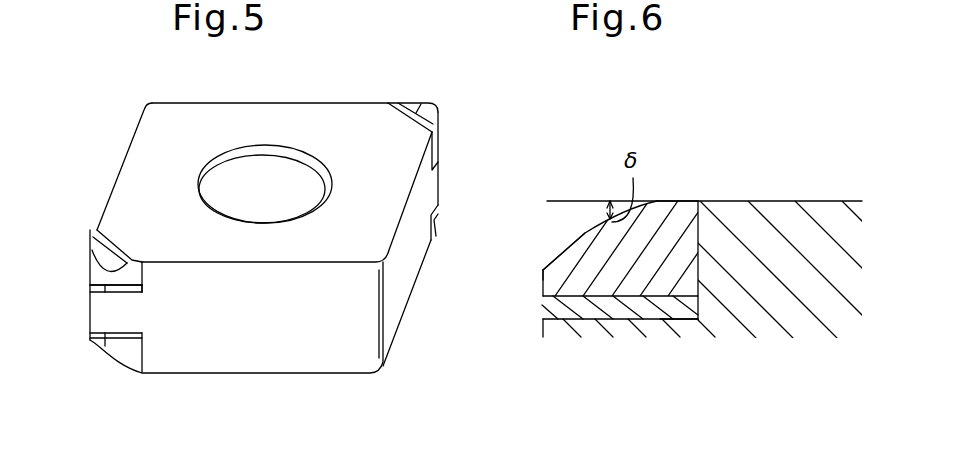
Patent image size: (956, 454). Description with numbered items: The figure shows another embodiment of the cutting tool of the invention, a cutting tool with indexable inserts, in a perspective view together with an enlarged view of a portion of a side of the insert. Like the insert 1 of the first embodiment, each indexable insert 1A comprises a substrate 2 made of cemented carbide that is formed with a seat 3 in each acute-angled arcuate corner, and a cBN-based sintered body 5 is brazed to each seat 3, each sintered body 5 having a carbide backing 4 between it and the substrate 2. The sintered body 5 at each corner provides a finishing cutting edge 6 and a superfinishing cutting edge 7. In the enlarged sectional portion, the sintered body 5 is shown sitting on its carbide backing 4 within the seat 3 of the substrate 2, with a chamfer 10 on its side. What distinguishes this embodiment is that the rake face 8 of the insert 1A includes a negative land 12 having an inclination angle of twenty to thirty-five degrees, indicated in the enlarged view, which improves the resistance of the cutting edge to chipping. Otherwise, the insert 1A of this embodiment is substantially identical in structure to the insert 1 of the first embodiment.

In FIG. 5, the indexable insert 1 is at (93, 247).
In FIG. 6, the indexable insert 1A is at (478, 150).
In FIG. 5, the substrate 2 is at (357, 355).
In FIG. 6, the substrate 2 is at (797, 217).
In FIG. 6, the seat 3 is at (677, 313).
In FIG. 6, the carbide backing 4 is at (618, 308).
In FIG. 5, the cBN-based sintered body 5 is at (100, 253).
In FIG. 6, the cBN-based sintered body 5 is at (670, 218).
In FIG. 5, the finishing cutting edge 6 is at (88, 272).
In FIG. 5, the superfinishing cutting edge 7 is at (143, 287).
In FIG. 6, the rake face 8 is at (673, 200).
In FIG. 6, the chamfer 10 is at (545, 268).
In FIG. 6, the negative land 12 is at (585, 235).